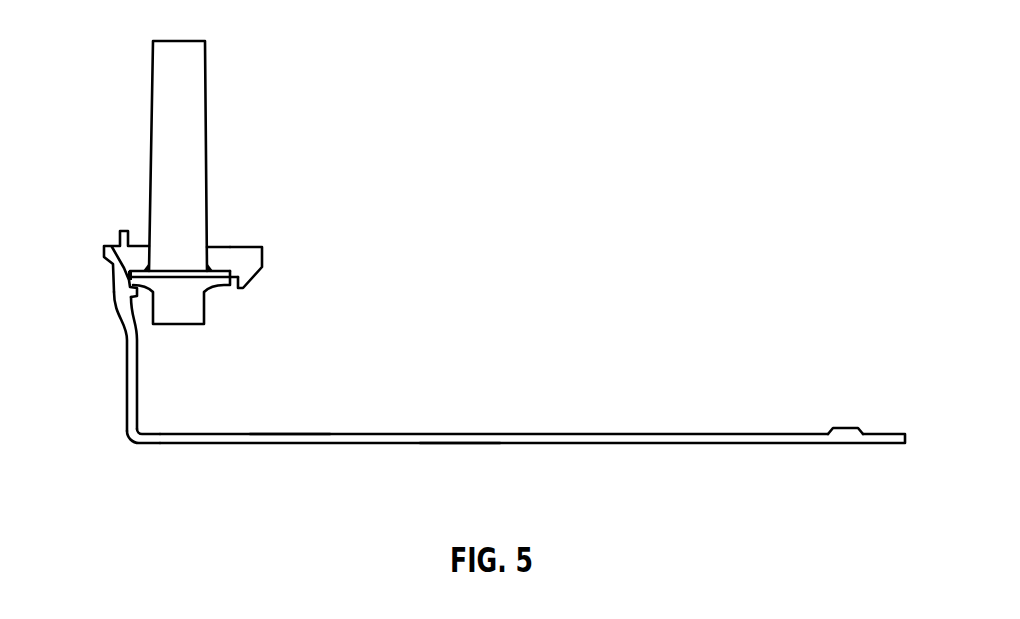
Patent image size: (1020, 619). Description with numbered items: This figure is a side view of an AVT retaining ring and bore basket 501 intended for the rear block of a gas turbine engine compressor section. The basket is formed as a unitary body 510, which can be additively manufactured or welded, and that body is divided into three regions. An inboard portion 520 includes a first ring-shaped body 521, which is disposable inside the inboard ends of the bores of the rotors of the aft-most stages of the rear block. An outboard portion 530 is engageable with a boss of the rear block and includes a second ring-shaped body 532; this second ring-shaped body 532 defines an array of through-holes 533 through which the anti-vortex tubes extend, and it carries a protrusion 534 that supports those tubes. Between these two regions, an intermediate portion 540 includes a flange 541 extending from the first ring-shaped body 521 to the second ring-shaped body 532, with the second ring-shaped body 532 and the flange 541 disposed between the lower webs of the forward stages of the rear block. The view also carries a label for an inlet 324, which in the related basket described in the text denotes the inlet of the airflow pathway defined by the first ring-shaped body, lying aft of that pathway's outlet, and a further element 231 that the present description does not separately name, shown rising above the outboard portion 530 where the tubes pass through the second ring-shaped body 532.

The post 231 is at (173, 61).
The inlet 324 is at (450, 443).
The AVT retaining ring and bore basket 501 is at (441, 359).
The unitary body 510 is at (623, 437).
The inboard portion 520 is at (802, 435).
The first ring-shaped body 521 is at (285, 436).
The outboard portion 530 is at (262, 247).
The second ring-shaped body 532 is at (220, 246).
The through-holes 533 is at (177, 250).
The protrusion 534 is at (126, 266).
The intermediate portion 540 is at (132, 412).
The flange 541 is at (138, 383).